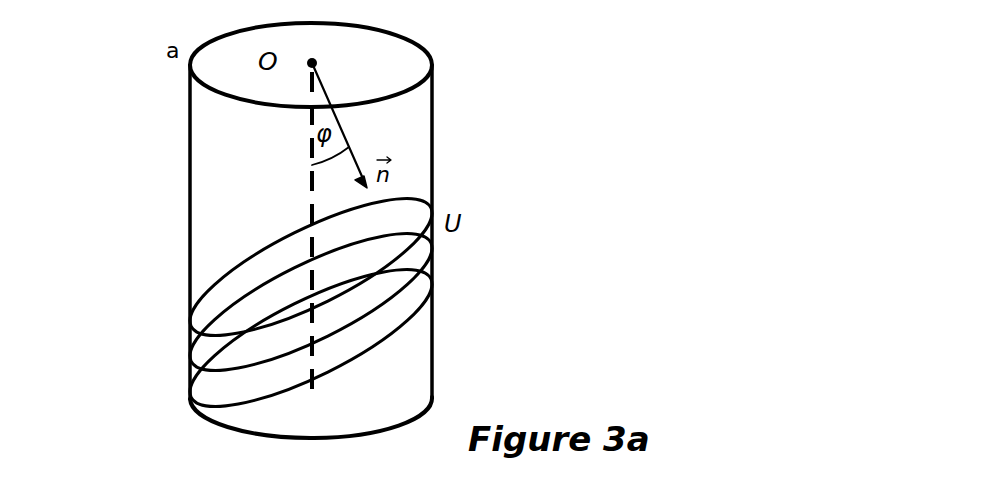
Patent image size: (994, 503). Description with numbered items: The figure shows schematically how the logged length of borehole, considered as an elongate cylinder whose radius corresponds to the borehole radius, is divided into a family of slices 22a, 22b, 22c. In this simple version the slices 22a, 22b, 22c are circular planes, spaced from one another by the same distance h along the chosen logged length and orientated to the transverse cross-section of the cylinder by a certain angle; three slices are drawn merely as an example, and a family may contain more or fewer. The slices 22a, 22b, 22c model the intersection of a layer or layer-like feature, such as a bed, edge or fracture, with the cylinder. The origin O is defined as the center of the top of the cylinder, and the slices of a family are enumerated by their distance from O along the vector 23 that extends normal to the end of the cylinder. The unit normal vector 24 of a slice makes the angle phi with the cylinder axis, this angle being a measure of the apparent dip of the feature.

The unit normal vector 24 is at (318, 64).
The vector normal to the end of the cylinder 23 is at (307, 177).
The slice 22a is at (403, 206).
The slice 22b is at (415, 240).
The slice 22c is at (405, 329).